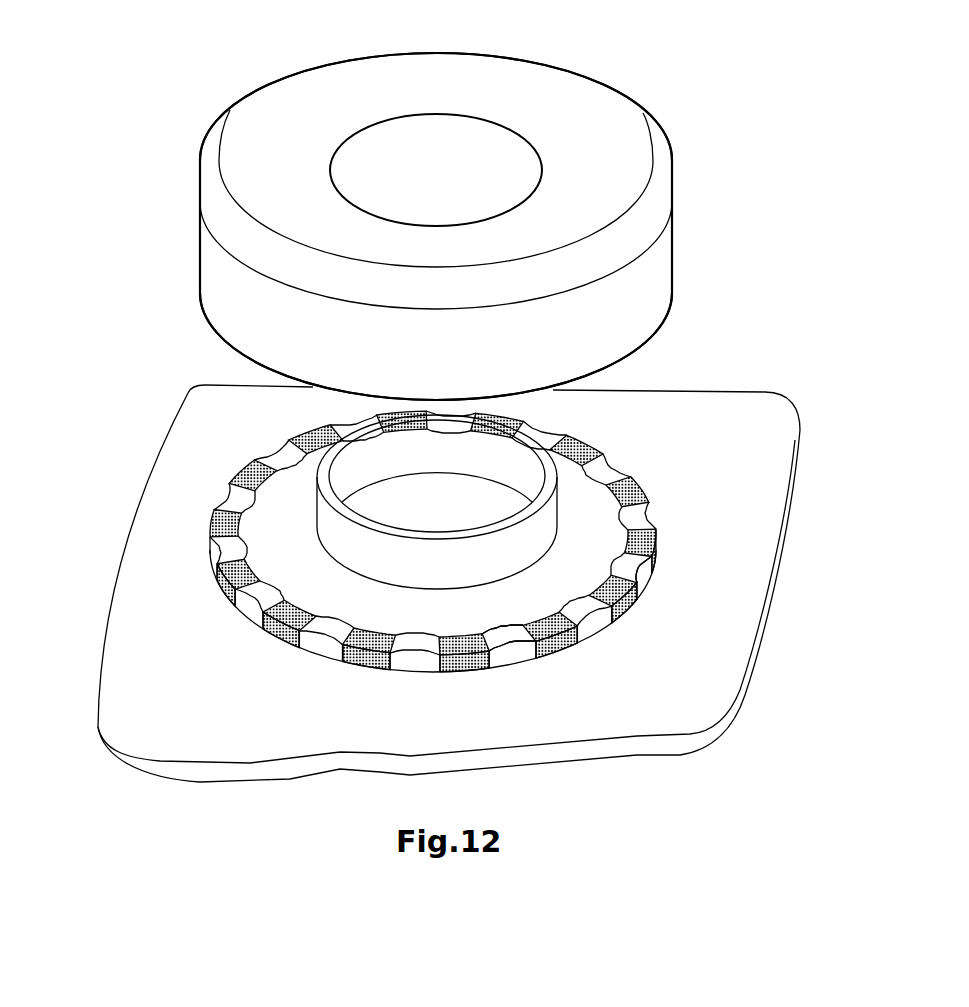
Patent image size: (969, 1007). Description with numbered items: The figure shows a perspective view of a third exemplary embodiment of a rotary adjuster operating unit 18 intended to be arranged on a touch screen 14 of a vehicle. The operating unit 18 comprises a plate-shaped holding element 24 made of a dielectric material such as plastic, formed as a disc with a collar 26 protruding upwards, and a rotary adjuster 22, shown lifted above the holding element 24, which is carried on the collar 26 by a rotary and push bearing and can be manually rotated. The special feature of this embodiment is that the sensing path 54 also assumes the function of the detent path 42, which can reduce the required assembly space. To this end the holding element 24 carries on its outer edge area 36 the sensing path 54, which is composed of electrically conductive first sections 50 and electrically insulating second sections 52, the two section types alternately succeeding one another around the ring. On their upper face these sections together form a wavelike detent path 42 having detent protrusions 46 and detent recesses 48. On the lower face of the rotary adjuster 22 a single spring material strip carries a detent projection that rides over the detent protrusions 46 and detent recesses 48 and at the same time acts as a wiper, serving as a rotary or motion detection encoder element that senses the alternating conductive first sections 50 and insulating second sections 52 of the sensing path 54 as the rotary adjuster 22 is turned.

The touch screen 14 is at (157, 622).
The operating unit 18 is at (118, 308).
The rotary adjuster 22 is at (600, 137).
The holding element 24 is at (580, 542).
The collar 26 is at (333, 522).
The outer edge area 36 is at (616, 648).
The detent path 42 is at (668, 495).
The detent protrusions 46 is at (632, 567).
The detent recesses 48 is at (637, 578).
The first sections 50 is at (563, 645).
The second sections 52 is at (512, 640).
The sensing path 54 is at (648, 465).